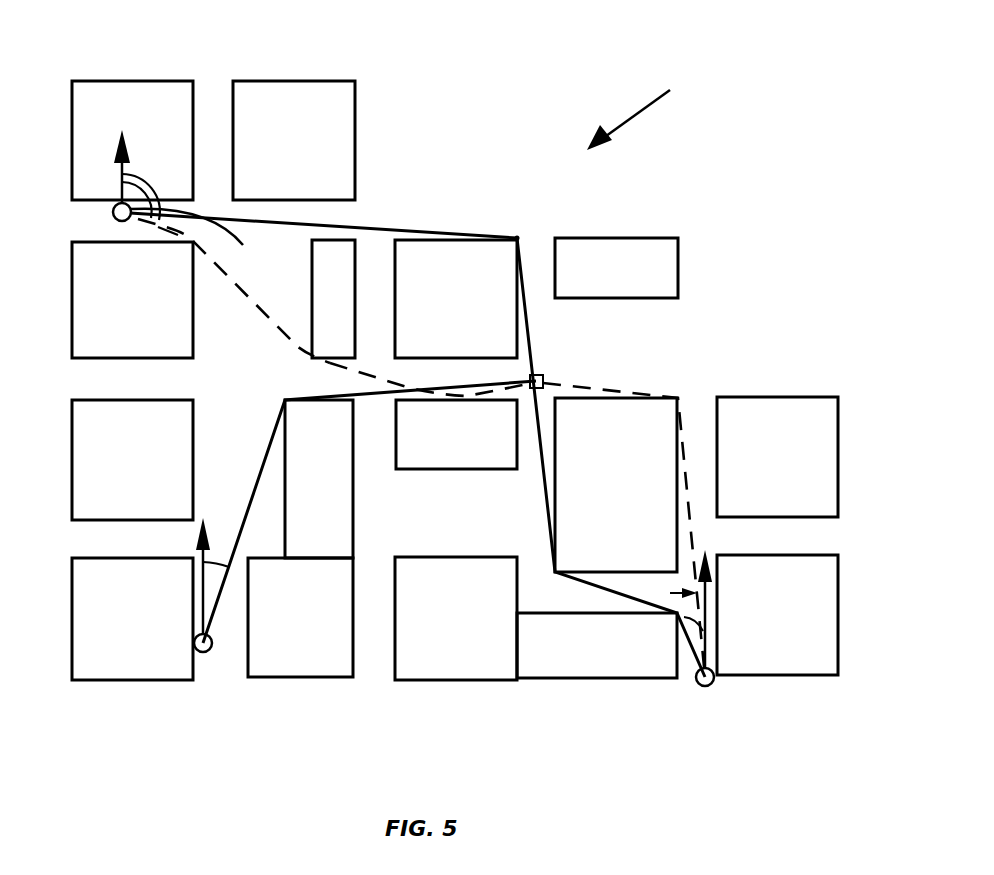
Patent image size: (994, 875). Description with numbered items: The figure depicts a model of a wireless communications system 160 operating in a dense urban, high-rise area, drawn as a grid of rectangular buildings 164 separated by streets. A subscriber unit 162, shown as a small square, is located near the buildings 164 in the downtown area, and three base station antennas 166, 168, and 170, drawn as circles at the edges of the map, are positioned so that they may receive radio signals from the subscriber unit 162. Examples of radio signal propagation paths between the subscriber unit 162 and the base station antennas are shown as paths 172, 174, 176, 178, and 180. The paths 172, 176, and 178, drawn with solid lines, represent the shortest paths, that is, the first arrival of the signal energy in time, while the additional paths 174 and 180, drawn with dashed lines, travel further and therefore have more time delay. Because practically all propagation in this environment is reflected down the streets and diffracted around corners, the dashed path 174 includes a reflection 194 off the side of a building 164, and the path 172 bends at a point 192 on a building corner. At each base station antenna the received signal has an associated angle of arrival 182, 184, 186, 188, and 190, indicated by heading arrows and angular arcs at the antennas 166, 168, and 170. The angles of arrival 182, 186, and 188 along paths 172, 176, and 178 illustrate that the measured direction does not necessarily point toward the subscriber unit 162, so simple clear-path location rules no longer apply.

The wireless communications system 160 is at (653, 114).
The subscriber unit 162 is at (543, 380).
The buildings 164 is at (480, 308).
The base station antenna 166 is at (113, 214).
The base station antenna 168 is at (212, 655).
The base station antenna 170 is at (697, 686).
The radio signal propagation path 172 is at (397, 232).
The radio signal propagation path 174 is at (223, 278).
The radio signal propagation path 176 is at (272, 435).
The radio signal propagation path 178 is at (543, 495).
The radio signal propagation path 180 is at (690, 527).
The angle of arrival 182 is at (143, 183).
The angle of arrival 184 is at (201, 241).
The angle of arrival 186 is at (222, 566).
The angle of arrival 188 is at (621, 596).
The angle of arrival 190 is at (727, 593).
The route corner point 192 is at (517, 237).
The reflection 194 is at (452, 398).